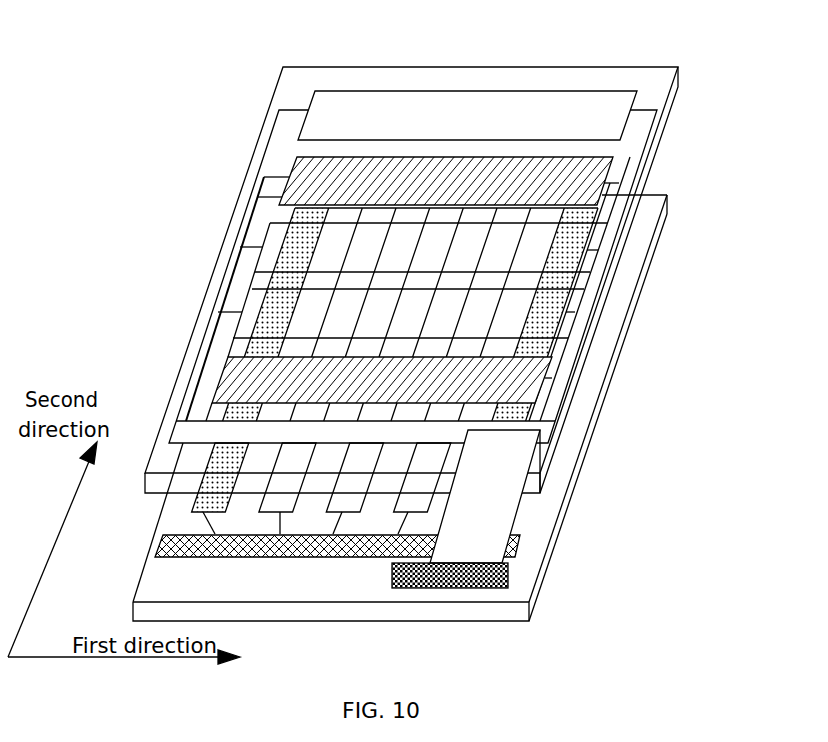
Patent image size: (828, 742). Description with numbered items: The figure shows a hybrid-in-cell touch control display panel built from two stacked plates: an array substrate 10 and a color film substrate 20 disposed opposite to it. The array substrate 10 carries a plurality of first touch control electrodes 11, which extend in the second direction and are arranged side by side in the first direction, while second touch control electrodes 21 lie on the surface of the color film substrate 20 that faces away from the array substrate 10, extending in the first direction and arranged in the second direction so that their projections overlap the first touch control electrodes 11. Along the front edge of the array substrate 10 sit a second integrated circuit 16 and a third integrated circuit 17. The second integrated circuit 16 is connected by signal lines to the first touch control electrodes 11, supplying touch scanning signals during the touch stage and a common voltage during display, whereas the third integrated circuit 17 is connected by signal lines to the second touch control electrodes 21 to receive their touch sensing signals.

The array substrate 10 is at (662, 233).
The color film substrate 20 is at (652, 92).
The second touch control electrode 21 is at (467, 83).
The first touch control electrode 11 is at (175, 488).
The second integrated circuit 16 is at (520, 547).
The third integrated circuit 17 is at (510, 575).